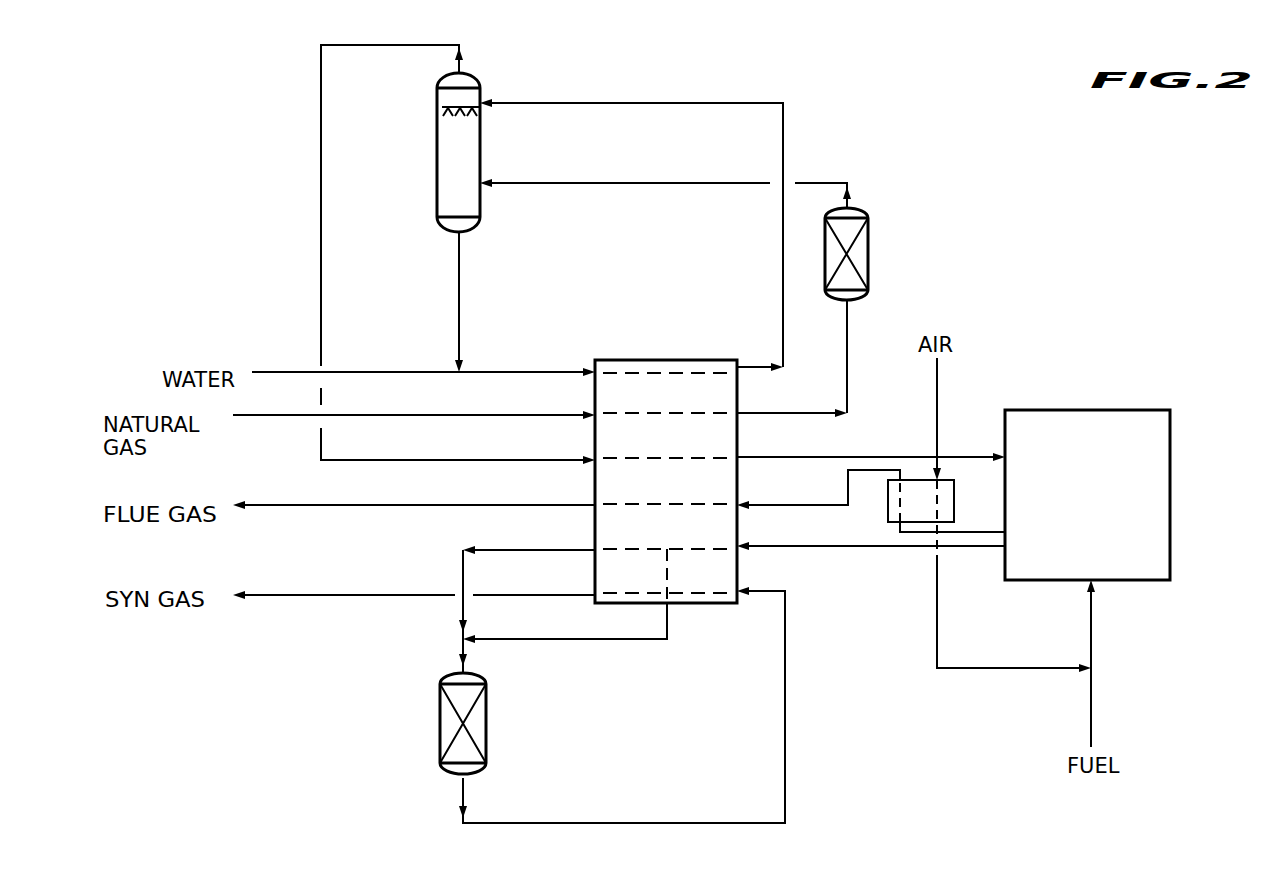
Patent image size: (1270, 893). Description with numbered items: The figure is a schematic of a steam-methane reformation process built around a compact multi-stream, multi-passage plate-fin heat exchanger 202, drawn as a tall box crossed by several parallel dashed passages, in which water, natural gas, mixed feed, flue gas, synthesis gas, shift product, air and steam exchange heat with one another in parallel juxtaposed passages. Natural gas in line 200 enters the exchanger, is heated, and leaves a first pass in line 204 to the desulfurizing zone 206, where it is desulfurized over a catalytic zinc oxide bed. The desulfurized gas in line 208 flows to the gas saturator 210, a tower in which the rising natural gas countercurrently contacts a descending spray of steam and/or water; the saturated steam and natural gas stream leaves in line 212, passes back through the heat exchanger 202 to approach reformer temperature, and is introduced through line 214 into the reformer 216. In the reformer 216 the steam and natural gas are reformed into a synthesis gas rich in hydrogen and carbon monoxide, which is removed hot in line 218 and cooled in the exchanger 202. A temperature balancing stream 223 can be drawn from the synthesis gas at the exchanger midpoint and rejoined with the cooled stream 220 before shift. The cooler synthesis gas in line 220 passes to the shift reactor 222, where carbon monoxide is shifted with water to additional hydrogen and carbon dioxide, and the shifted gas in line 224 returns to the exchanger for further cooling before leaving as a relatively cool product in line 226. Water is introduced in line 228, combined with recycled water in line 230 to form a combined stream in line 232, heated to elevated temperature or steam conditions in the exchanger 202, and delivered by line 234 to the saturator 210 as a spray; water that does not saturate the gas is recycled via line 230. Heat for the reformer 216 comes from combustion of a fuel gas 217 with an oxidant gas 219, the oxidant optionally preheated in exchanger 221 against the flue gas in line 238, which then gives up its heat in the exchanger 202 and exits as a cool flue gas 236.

The natural gas line 200 is at (312, 415).
The multi-stream, multi-passage plate-fin heat exchanger 202 is at (652, 358).
The heated natural gas line 204 is at (848, 392).
The desulfurizing zone 206 is at (869, 245).
The desulfurized natural gas line 208 is at (642, 185).
The gas saturator 210 is at (481, 158).
The saturated natural gas line 212 is at (320, 170).
The warmed steam-saturated natural gas line 214 is at (775, 456).
The reformer 216 is at (1090, 410).
The fuel gas 217 is at (1095, 686).
The synthesis gas line 218 is at (775, 545).
The oxidant gas 219 is at (938, 392).
The cooled synthesis gas line 220 is at (461, 568).
The exchanger 221 is at (888, 519).
The shift reactor 222 is at (438, 720).
The temperature balancing stream 223 is at (572, 641).
The shifted synthesis gas line 224 is at (784, 716).
The synthesis gas product line 226 is at (315, 594).
The water line 228 is at (294, 371).
The recycled water line 230 is at (461, 300).
The combined water stream line 232 is at (486, 372).
The heated water line 234 is at (775, 262).
The cool flue gas 236 is at (288, 504).
The flue gas line 238 is at (757, 503).